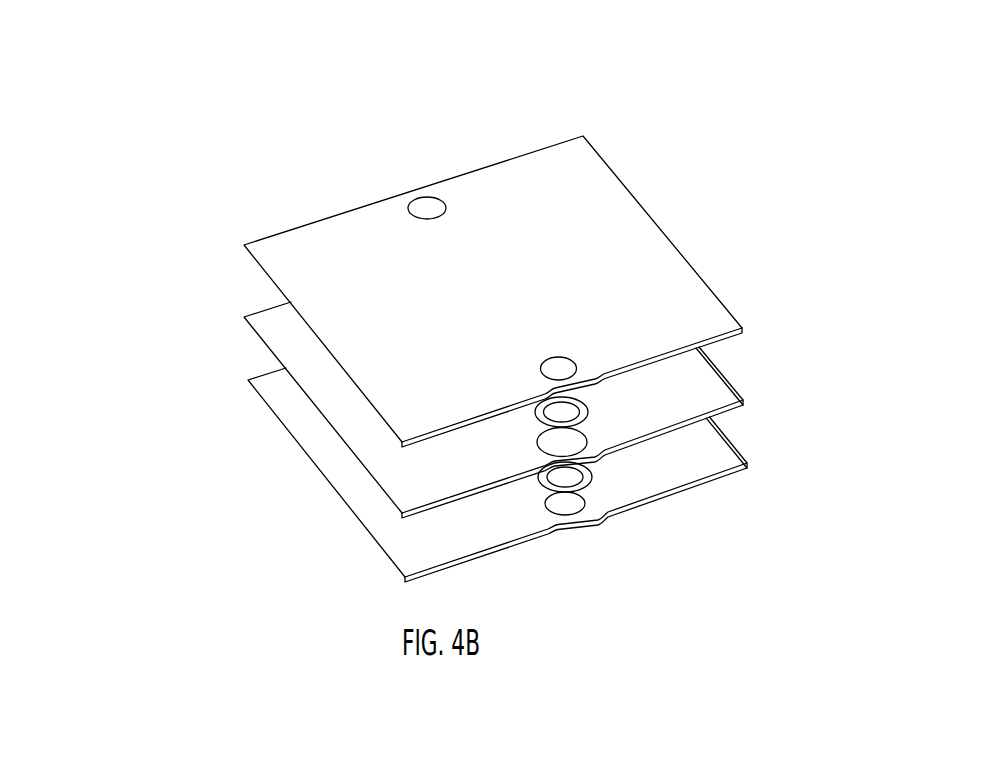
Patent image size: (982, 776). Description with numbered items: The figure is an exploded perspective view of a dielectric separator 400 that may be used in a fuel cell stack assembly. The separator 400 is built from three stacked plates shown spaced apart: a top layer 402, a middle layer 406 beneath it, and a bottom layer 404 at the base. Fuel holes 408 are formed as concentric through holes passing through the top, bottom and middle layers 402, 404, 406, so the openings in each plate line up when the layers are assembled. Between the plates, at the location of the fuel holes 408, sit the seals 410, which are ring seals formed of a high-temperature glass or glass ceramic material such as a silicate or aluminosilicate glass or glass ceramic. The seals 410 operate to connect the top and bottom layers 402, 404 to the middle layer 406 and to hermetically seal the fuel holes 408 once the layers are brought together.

The dielectric separator 400 is at (162, 106).
The top layer 402 is at (312, 258).
The bottom layer 404 is at (330, 480).
The middle layer 406 is at (317, 359).
The fuel holes 408 is at (430, 214).
The seals 410 is at (578, 424).